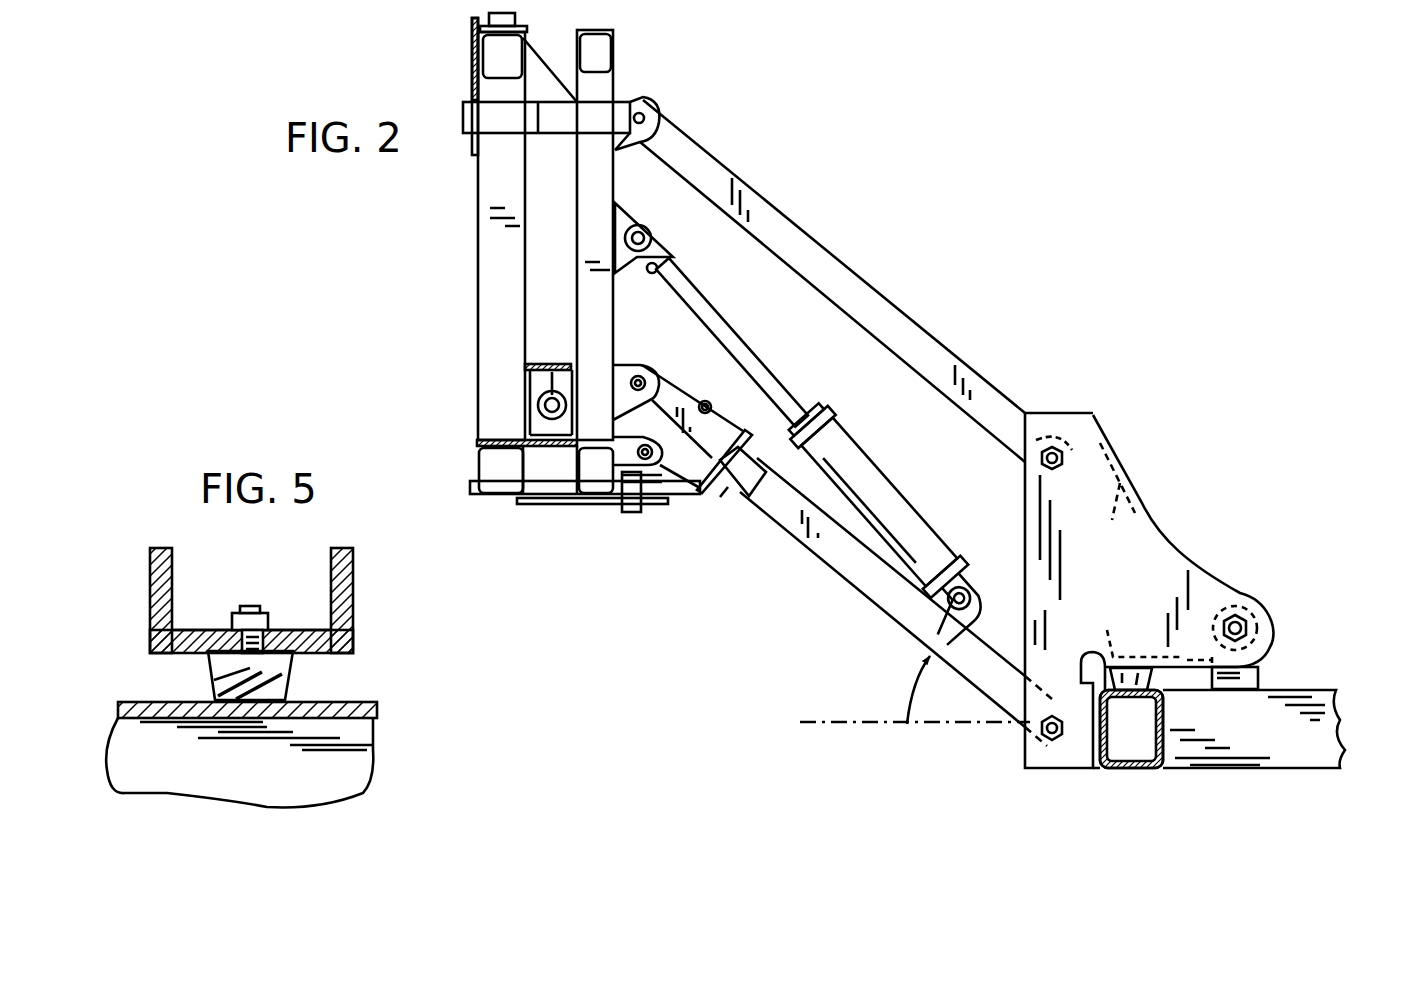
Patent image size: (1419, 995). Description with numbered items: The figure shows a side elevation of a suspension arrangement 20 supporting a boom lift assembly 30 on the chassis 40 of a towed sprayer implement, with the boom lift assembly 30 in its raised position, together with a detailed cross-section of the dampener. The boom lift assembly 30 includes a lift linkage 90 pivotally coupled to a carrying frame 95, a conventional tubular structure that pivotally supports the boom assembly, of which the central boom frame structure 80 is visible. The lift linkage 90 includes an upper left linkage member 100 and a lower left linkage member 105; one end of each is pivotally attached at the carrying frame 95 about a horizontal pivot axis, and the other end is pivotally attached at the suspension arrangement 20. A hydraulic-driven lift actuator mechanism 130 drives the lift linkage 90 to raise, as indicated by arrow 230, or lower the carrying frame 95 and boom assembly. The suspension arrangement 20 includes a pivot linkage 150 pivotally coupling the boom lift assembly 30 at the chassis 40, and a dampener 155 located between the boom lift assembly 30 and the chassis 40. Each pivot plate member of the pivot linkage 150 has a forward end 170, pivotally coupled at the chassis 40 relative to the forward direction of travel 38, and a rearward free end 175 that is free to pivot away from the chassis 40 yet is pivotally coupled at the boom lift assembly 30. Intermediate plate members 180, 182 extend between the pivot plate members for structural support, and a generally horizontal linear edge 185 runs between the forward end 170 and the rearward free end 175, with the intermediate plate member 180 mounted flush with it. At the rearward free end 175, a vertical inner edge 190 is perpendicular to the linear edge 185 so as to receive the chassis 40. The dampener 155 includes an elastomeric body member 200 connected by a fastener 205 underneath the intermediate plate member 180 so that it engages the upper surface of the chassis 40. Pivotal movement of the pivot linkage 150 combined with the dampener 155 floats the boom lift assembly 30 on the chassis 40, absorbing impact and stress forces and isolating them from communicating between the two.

In FIG. 2, the suspension arrangement 20 is at (1165, 425).
In FIG. 5, the suspension arrangement 20 is at (390, 572).
In FIG. 2, the boom lift assembly 30 is at (906, 198).
In FIG. 2, the forward direction of travel 38 is at (1415, 482).
In FIG. 2, the chassis 40 is at (1303, 672).
In FIG. 5, the chassis 40 is at (370, 695).
In FIG. 2, the central boom frame structure 80 is at (460, 270).
In FIG. 2, the lift linkage 90 is at (683, 378).
In FIG. 2, the carrying frame 95 is at (622, 183).
In FIG. 2, the upper left linkage member 100 is at (928, 333).
In FIG. 2, the lower left linkage member 105 is at (808, 548).
In FIG. 2, the lift actuator mechanism 130 is at (878, 442).
In FIG. 2, the pivot linkage 150 is at (1195, 563).
In FIG. 2, the dampener 155 is at (1158, 675).
In FIG. 5, the dampener 155 is at (318, 767).
In FIG. 2, the forward end 170 is at (1285, 582).
In FIG. 2, the rearward free end 175 is at (1055, 818).
In FIG. 2, the intermediate plate member 180 is at (1113, 622).
In FIG. 2, the intermediate plate member 182 is at (1121, 501).
In FIG. 2, the linear edge 185 is at (1192, 668).
In FIG. 2, the inner edge 190 is at (1093, 760).
In FIG. 5, the body member 200 is at (375, 850).
In FIG. 5, the fastener 205 is at (240, 604).
In FIG. 2, the arrow 230 is at (910, 697).